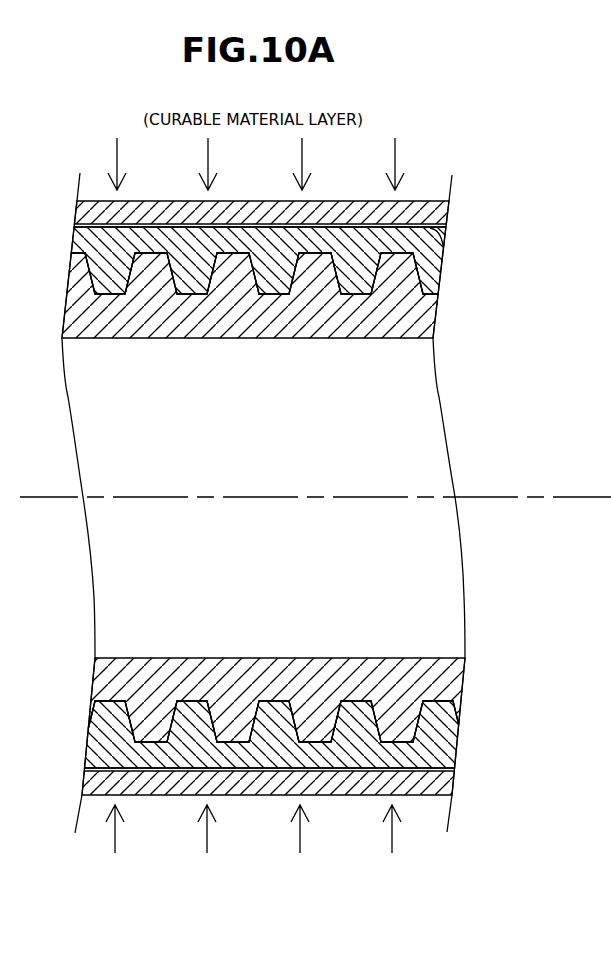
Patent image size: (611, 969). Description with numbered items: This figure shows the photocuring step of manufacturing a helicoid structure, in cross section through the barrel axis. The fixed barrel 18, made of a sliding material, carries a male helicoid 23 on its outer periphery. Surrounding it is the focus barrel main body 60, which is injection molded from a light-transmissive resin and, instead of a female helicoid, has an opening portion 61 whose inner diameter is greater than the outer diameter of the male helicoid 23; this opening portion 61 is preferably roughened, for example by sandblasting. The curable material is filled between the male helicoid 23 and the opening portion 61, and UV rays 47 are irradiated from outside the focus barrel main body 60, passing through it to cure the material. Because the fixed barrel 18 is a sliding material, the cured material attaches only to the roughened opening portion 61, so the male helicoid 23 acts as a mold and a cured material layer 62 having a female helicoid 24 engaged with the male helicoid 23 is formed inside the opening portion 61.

The fixed barrel 18 is at (394, 326).
The male helicoid 23 is at (260, 283).
The female helicoid 24 is at (133, 250).
The UV rays 47 is at (119, 165).
The focus barrel main body 60 is at (366, 201).
The opening portion 61 is at (440, 240).
The cured material layer 62 is at (260, 245).